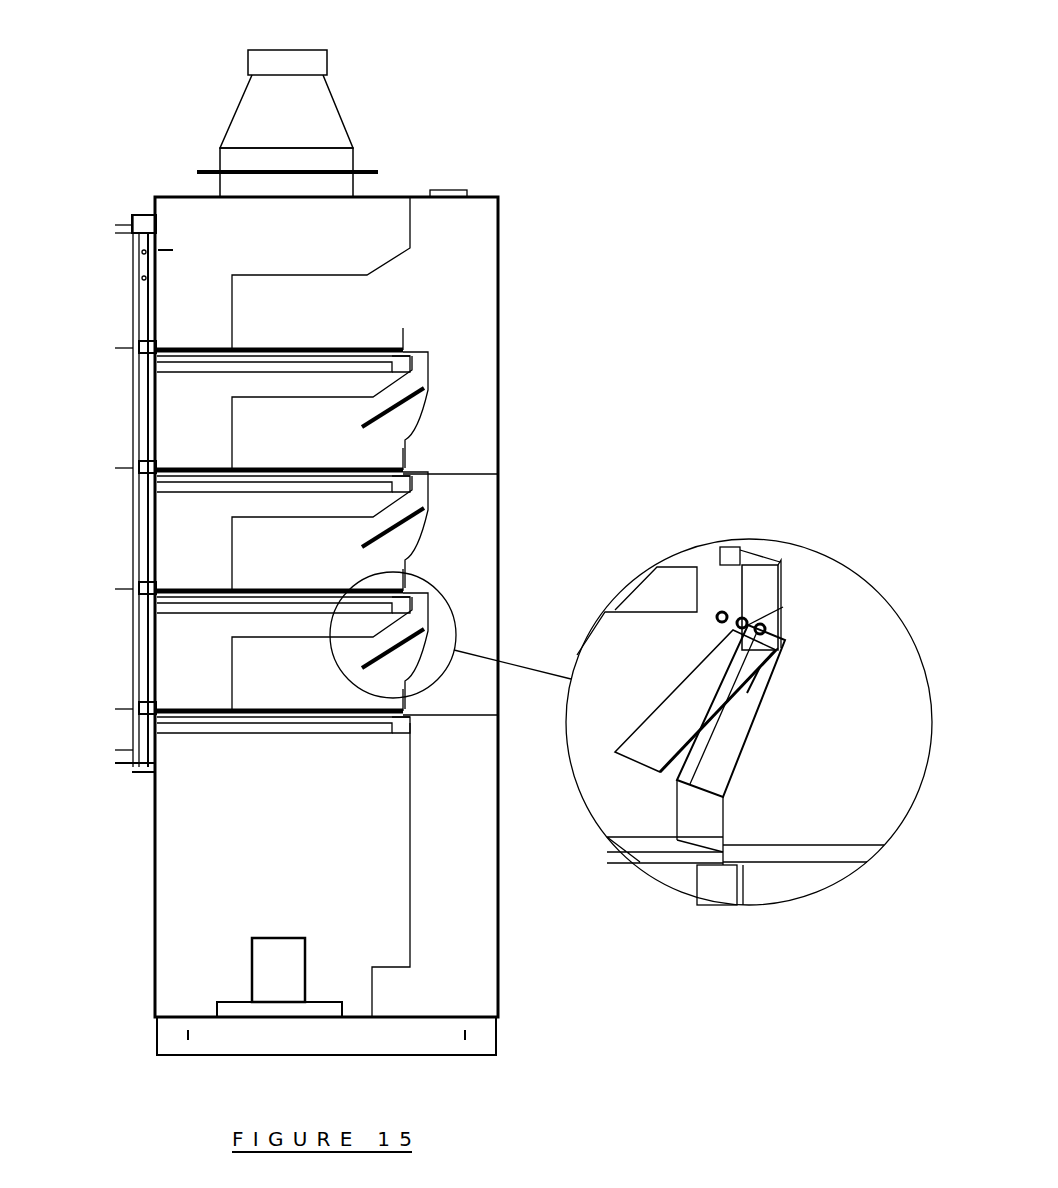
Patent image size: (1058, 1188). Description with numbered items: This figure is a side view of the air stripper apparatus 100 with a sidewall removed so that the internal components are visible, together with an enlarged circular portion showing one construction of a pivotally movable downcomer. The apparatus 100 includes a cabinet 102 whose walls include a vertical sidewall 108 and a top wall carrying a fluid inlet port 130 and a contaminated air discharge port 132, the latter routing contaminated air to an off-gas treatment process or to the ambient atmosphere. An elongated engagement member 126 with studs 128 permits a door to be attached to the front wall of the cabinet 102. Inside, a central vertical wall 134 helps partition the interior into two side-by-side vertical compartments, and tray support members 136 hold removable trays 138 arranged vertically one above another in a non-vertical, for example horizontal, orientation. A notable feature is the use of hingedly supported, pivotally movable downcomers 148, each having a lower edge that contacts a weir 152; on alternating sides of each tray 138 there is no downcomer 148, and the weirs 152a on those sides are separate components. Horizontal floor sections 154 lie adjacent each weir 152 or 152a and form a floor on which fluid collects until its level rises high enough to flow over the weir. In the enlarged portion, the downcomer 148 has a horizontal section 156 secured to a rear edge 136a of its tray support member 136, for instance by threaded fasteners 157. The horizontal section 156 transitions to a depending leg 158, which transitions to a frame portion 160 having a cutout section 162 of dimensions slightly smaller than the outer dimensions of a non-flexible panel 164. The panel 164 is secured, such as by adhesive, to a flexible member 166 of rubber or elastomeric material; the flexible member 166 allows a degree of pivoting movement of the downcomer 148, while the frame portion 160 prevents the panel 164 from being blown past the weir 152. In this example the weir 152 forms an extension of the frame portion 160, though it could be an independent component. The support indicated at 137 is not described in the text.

The air stripper apparatus 100 is at (430, 78).
The cabinet 102 is at (488, 216).
The vertical sidewall 108 is at (392, 195).
The elongated engagement member 126 is at (140, 643).
The studs 128 is at (120, 468).
The fluid inlet port 130 is at (437, 192).
The contaminated air discharge port 132 is at (310, 63).
The central vertical wall 134 is at (447, 372).
The tray support members 136 is at (257, 592).
The rear edge of tray support member 136a is at (406, 604).
The support 137 is at (612, 834).
The removable trays 138 is at (319, 341).
The downcomers 148 is at (392, 418).
The weir 152 is at (712, 815).
The weirs 152a is at (403, 333).
The horizontal floor sections 154 is at (468, 473).
The horizontal section 156 is at (415, 590).
The threaded fasteners 157 is at (722, 627).
The depending leg 158 is at (420, 605).
The frame portion 160 is at (407, 668).
The cutout section 162 is at (750, 745).
The non-flexible panel 164 is at (660, 735).
The flexible member 166 is at (770, 655).